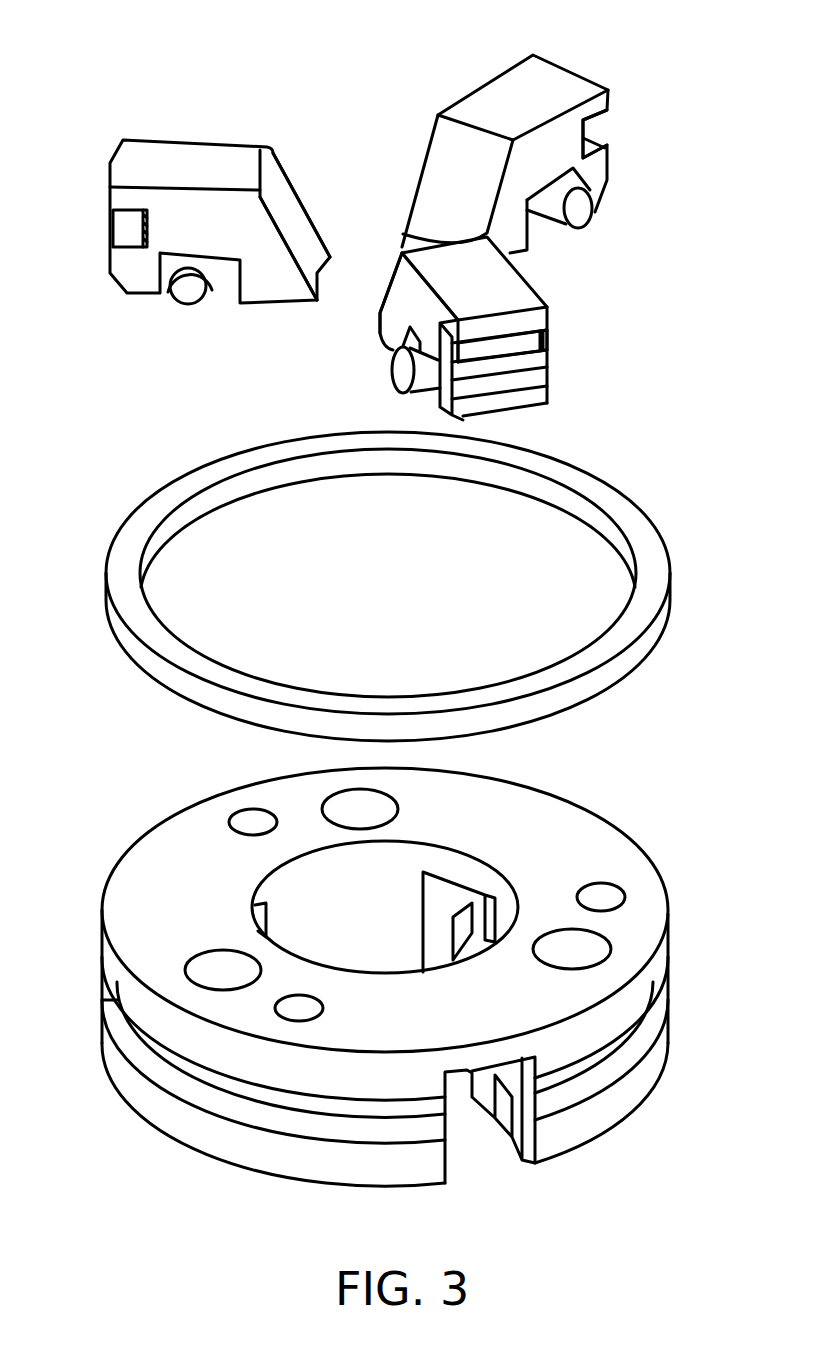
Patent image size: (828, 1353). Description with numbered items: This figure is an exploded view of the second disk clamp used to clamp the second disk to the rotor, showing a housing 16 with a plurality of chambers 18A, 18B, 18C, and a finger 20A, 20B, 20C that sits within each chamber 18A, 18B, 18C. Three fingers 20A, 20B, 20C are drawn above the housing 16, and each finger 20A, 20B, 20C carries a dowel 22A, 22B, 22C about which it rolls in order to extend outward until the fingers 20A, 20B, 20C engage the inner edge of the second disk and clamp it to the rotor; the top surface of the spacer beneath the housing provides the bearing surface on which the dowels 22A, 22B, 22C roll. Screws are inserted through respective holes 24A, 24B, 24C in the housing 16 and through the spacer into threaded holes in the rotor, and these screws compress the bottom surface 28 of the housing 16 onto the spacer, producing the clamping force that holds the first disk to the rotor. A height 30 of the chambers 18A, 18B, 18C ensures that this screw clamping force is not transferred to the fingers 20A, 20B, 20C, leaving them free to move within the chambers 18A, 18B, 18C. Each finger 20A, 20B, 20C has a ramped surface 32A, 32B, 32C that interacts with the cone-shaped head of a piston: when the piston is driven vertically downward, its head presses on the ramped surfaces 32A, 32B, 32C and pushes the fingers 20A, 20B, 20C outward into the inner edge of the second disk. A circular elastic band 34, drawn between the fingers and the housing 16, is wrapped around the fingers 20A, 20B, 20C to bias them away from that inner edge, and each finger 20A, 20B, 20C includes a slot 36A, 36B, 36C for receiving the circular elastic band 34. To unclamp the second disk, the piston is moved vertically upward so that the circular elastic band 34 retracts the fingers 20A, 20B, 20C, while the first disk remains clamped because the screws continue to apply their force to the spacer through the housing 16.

The housing 16 is at (416, 998).
The chamber 18A is at (509, 1164).
The chamber 18B is at (434, 895).
The chamber 18C is at (287, 912).
The finger 20A is at (474, 304).
The finger 20B is at (540, 137).
The finger 20C is at (169, 235).
The dowel 22A is at (392, 369).
The dowel 22B is at (592, 209).
The dowel 22C is at (183, 294).
The hole 24A is at (556, 953).
The hole 24B is at (376, 809).
The hole 24C is at (213, 963).
The bottom surface 28 is at (275, 1186).
The height 30 is at (462, 1086).
The ramped surface 32A is at (387, 255).
The ramped surface 32B is at (443, 153).
The ramped surface 32C is at (286, 193).
The circular elastic band 34 is at (670, 574).
The slot 36A is at (516, 342).
The slot 36B is at (606, 126).
The slot 36C is at (95, 220).